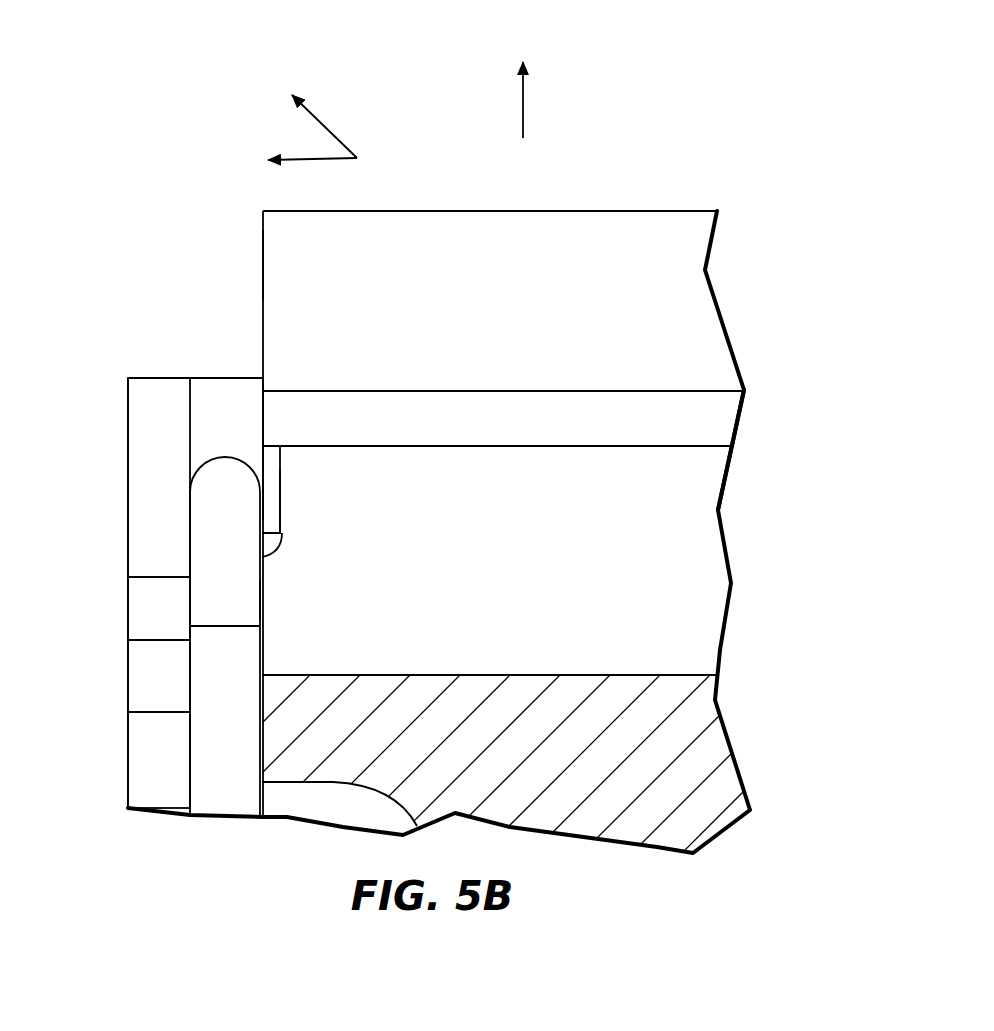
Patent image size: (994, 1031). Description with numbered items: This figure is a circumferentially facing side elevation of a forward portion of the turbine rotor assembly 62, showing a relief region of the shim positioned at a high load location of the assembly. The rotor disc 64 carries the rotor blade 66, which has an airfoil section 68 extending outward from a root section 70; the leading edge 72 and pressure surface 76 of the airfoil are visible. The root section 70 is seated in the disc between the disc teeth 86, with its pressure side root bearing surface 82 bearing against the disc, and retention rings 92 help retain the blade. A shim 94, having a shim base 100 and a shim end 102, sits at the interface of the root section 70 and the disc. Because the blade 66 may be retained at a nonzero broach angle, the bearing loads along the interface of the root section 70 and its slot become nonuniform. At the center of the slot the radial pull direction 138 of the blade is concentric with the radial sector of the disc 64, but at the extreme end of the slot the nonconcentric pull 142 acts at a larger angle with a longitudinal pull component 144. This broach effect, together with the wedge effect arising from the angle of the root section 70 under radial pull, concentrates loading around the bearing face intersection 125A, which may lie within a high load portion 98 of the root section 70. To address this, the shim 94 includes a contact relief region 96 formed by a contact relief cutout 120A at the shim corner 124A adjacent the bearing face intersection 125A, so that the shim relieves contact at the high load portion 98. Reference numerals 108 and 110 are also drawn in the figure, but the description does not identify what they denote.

The rotor assembly 62 is at (778, 128).
The rotor disc 64 is at (150, 348).
The rotor blade 66 is at (754, 272).
The airfoil section 68 is at (624, 259).
The root section 70 is at (762, 593).
The leading edge 72 is at (262, 267).
The pressure surface 76 is at (415, 272).
The pressure side root bearing surface 82 is at (674, 414).
The disc teeth 86 is at (158, 490).
The retention rings 92 is at (226, 597).
The shim 94 is at (710, 512).
The contact relief regions 96 is at (308, 536).
The high load portion 98 is at (273, 480).
The shim base 100 is at (682, 675).
The shim end 102 is at (270, 597).
The body section 108 is at (612, 640).
The hatched body region 110 is at (548, 522).
The contact relief cutout 120A is at (283, 547).
The shim corner 124A is at (289, 430).
The bearing face intersection 125A is at (258, 421).
The radial pull direction 138 is at (525, 102).
The nonconcentric pull 142 is at (316, 119).
The longitudinal pull component 144 is at (297, 163).